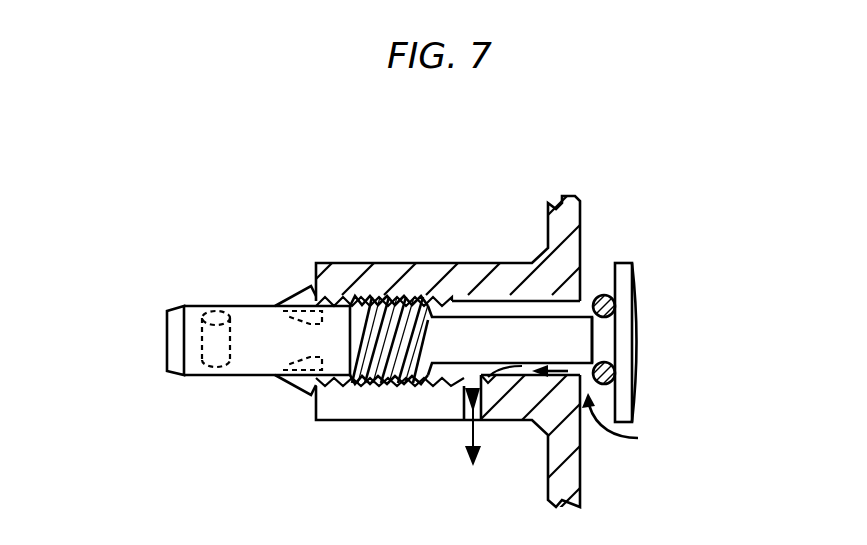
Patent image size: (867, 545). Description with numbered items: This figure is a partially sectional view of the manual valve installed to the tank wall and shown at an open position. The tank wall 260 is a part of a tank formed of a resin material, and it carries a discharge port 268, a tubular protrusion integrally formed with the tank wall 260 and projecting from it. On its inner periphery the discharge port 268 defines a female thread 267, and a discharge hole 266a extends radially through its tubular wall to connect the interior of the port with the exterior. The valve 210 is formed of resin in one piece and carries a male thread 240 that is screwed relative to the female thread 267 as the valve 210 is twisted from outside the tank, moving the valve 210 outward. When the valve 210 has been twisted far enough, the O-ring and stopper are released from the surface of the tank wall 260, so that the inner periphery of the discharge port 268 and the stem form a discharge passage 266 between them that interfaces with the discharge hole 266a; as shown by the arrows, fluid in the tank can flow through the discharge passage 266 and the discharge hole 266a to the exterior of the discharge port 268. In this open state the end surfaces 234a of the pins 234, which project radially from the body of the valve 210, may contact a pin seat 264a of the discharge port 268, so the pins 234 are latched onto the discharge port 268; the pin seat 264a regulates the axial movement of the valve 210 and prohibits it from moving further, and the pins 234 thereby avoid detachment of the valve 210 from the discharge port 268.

The valve 210 is at (613, 236).
The pin 234 is at (303, 288).
The end surface 234a is at (322, 300).
The male thread 240 is at (315, 422).
The tank wall 260 is at (523, 186).
The pin seat 264a is at (316, 292).
The discharge passage 266 is at (586, 420).
The discharge hole 266a is at (463, 432).
The female thread 267 is at (380, 387).
The discharge port 268 is at (366, 234).